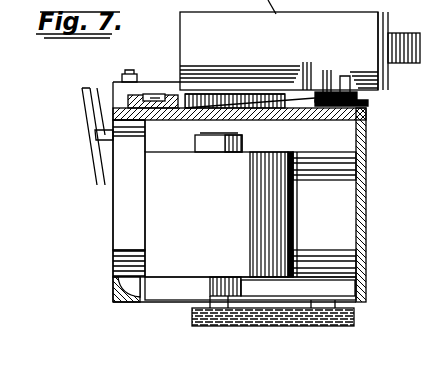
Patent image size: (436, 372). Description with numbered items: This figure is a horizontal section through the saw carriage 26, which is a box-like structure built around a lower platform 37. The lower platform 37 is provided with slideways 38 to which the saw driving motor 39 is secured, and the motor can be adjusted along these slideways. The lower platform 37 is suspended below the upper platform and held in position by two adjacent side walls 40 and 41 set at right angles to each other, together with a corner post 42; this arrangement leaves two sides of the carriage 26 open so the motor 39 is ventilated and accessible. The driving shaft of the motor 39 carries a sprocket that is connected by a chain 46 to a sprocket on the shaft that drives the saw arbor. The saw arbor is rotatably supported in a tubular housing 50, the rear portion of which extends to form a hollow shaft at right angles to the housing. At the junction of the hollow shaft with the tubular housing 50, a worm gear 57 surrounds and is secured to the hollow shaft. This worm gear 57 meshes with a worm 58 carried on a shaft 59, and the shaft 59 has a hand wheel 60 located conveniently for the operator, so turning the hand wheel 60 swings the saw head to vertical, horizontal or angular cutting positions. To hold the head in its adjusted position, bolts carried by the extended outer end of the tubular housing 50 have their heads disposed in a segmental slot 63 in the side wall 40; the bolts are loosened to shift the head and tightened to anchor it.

The saw carriage 26 is at (368, 166).
The lower platform 37 is at (123, 222).
The slideways 38 is at (318, 178).
The saw driving motor 39 is at (173, 264).
The side wall 40 is at (182, 120).
The side wall 41 is at (368, 292).
The corner post 42 is at (111, 287).
The chain 46 is at (262, 326).
The tubular housing 50 is at (367, 36).
The worm gear 57 is at (370, 103).
The worm 58 is at (322, 92).
The shaft 59 is at (110, 103).
The hand wheel 60 is at (92, 118).
The segmental slot 63 is at (152, 97).